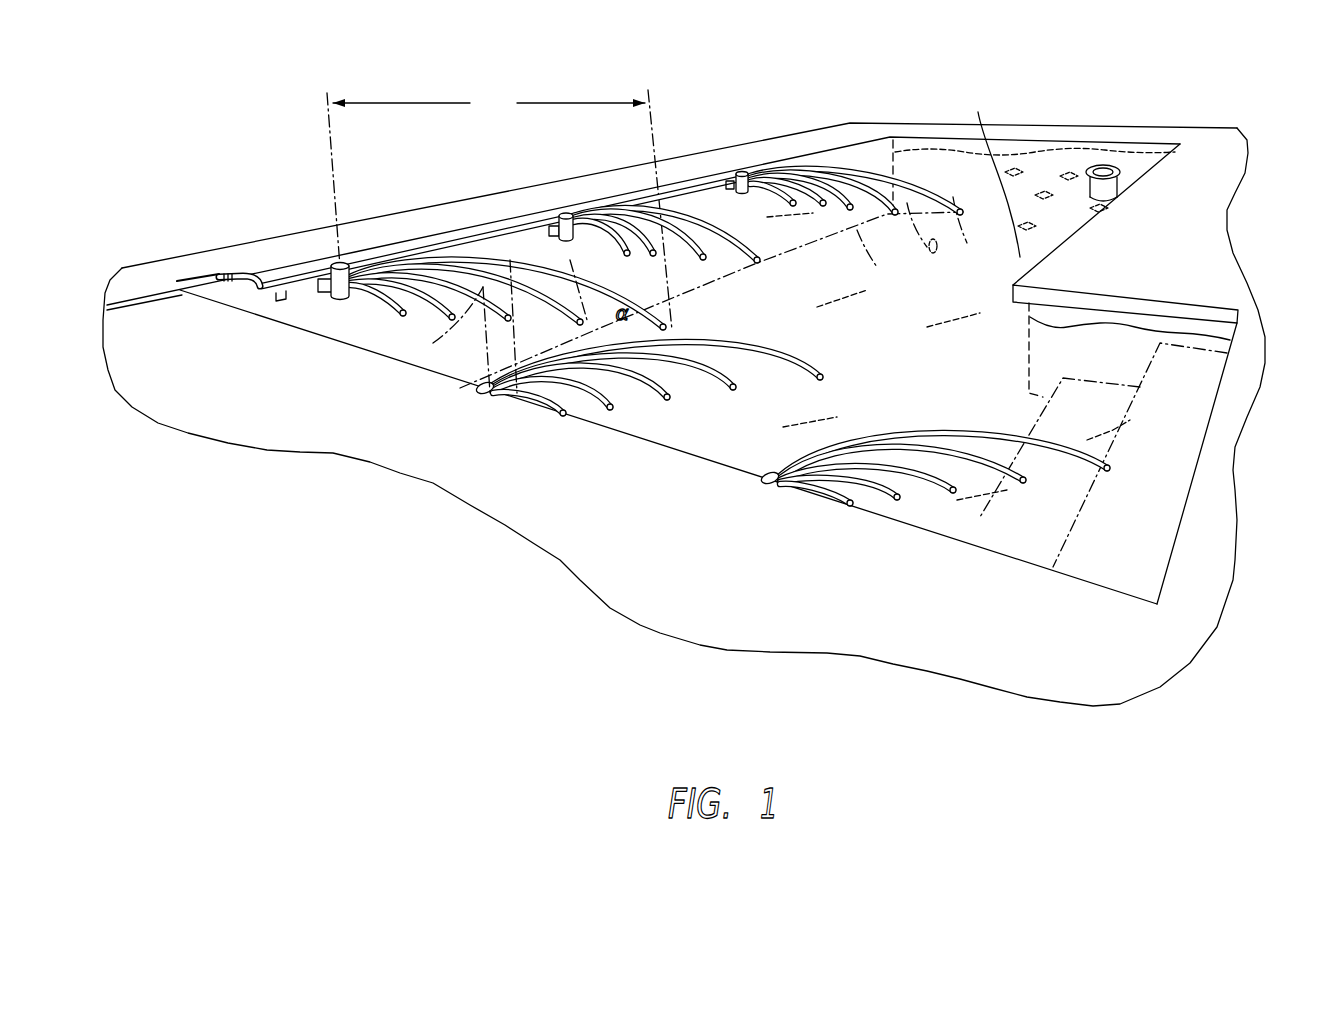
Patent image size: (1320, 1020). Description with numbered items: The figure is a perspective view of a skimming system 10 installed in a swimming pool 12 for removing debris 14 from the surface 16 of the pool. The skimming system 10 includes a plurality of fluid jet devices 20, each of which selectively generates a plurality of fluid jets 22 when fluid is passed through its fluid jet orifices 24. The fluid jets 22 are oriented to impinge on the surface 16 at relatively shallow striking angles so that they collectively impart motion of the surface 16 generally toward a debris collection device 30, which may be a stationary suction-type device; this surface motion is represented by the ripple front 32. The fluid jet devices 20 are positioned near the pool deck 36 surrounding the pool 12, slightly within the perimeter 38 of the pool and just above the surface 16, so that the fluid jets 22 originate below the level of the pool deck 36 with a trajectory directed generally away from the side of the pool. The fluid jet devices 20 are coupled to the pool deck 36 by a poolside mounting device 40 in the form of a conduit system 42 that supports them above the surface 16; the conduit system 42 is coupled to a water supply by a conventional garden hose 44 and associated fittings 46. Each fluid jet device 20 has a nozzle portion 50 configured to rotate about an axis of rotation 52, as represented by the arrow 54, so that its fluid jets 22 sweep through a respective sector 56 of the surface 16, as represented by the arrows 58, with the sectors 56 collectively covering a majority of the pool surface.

The skimming system 10 is at (943, 73).
The swimming pool 12 is at (1057, 110).
The debris 14 is at (963, 205).
The surface 16 is at (843, 389).
The fluid jet devices 20 is at (455, 405).
The fluid jets 22 is at (483, 322).
The fluid jet orifices 24 is at (333, 300).
The debris collection device 30 is at (1108, 170).
The ripple front 32 is at (1030, 243).
The pool deck 36 is at (427, 470).
The perimeter 38 is at (867, 140).
The poolside mounting device 40 is at (306, 262).
The conduit system 42 is at (273, 290).
The garden hose 44 is at (177, 280).
The fittings 46 is at (240, 276).
The nozzle portion 50 is at (280, 303).
The axis of rotation 52 is at (325, 193).
The arrow 54 is at (366, 244).
The sector 56 is at (433, 343).
The arrows 58 is at (849, 250).